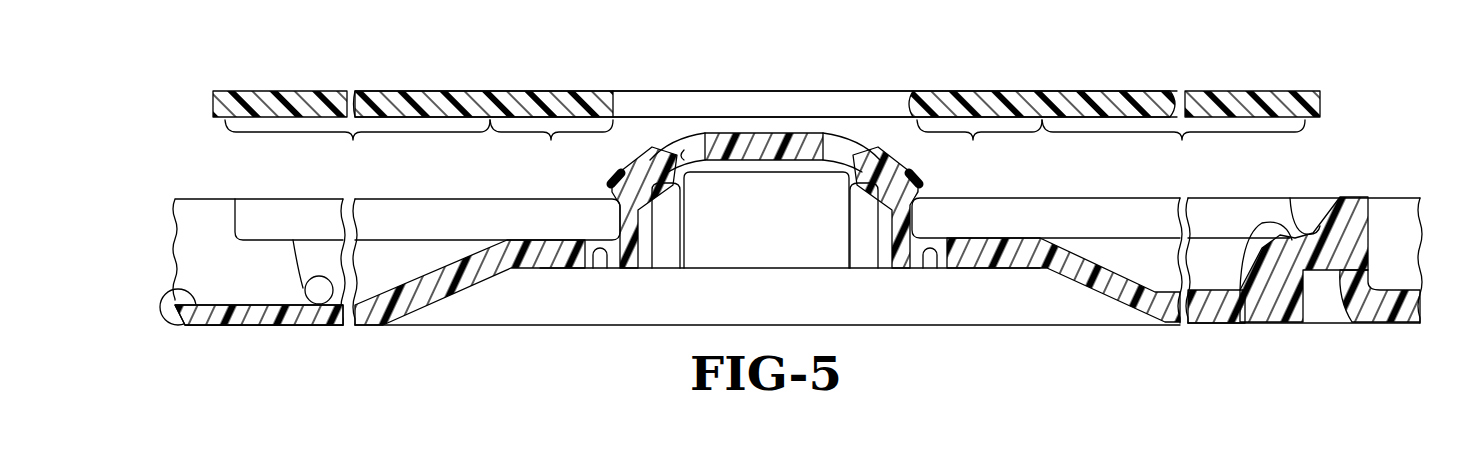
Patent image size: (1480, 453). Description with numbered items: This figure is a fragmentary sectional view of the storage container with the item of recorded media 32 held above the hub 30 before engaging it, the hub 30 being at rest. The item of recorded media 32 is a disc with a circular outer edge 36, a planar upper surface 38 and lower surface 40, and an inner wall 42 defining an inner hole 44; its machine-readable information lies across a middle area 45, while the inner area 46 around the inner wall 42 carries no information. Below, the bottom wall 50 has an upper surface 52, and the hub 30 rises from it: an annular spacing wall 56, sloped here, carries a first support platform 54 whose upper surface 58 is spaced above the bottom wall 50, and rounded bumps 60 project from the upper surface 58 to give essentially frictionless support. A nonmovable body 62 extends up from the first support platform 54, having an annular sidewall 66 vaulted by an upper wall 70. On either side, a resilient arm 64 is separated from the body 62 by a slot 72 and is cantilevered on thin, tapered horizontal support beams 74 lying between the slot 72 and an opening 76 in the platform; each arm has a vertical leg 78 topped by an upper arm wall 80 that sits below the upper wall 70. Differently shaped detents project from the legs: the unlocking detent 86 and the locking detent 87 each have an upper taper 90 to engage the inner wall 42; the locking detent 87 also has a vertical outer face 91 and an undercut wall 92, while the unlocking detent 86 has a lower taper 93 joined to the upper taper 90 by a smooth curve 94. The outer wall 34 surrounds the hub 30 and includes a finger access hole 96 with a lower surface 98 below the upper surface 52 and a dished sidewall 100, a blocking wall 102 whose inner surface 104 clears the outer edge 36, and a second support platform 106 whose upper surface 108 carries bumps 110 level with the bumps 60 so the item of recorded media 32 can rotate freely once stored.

The hub 30 is at (665, 352).
The item of recorded media 32 is at (1247, 90).
The outer wall 34 is at (266, 196).
The outer edge 36 is at (213, 97).
The upper surface 38 is at (1080, 91).
The lower surface 40 is at (517, 120).
The inner wall 42 is at (853, 103).
The inner hole 44 is at (803, 100).
The middle area 45 is at (765, 144).
The inner area 46 is at (766, 145).
The bottom wall 50 is at (240, 318).
The upper surface 52 is at (302, 290).
The first support platform 54 is at (510, 256).
The annular spacing wall 56 is at (440, 290).
The upper surface 58 is at (540, 238).
The bumps 60 is at (535, 230).
The body 62 is at (749, 131).
The resilient arms 64 is at (645, 156).
The sidewall 66 is at (770, 240).
The upper wall 70 is at (768, 140).
The slot 72 is at (690, 152).
The horizontal support beams 74 is at (600, 262).
The opening 76 is at (613, 262).
The vertical leg 78 is at (636, 214).
The upper arm wall 80 is at (652, 186).
The unlocking detent 86 is at (609, 180).
The locking detent 87 is at (926, 166).
The upper taper 90 is at (617, 192).
The vertical outer face 91 is at (921, 192).
The undercut wall 92 is at (918, 206).
The lower taper 93 is at (617, 205).
The smooth curve 94 is at (609, 188).
The finger access hole 96 is at (198, 254).
The lower surface 98 is at (172, 290).
The sidewall 100 is at (218, 205).
The blocking wall 102 is at (1355, 200).
The inner surface 104 is at (1330, 200).
The second support platform 106 is at (1312, 272).
The upper surface 108 is at (1266, 262).
The bumps 110 is at (1290, 198).